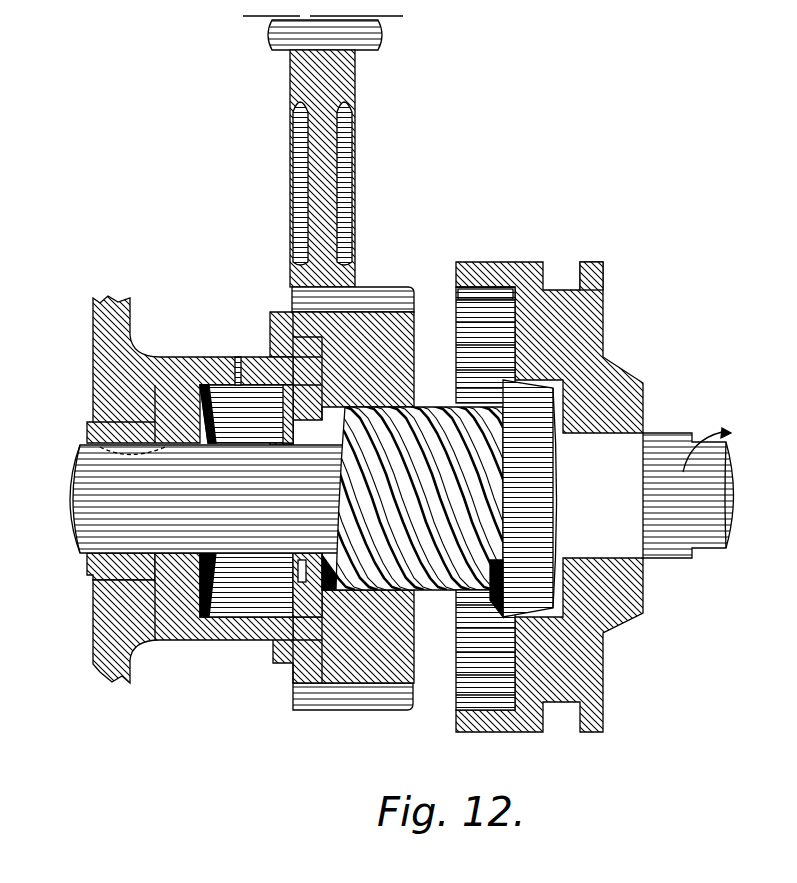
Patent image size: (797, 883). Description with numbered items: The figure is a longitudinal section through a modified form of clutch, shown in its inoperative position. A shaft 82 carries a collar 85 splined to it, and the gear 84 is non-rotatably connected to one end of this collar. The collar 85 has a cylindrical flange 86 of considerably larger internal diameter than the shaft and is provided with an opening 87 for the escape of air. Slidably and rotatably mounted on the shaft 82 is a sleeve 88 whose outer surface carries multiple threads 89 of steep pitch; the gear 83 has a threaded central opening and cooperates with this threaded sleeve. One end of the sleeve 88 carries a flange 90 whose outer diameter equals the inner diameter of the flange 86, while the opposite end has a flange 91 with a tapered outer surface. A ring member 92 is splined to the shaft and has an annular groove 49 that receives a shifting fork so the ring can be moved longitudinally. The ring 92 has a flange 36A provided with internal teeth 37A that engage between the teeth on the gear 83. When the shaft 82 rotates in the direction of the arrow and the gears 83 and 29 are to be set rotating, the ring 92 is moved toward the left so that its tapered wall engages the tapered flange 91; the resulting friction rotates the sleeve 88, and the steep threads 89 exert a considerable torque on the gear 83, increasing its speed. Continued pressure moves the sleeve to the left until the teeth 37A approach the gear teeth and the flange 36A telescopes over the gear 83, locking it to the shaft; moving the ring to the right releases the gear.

The low and reverse gear 29 is at (322, 232).
The gear 83 is at (383, 322).
The gear 84 is at (110, 398).
The collar 85 is at (103, 568).
The cylindrical flange 86 is at (222, 637).
The opening 87 is at (239, 383).
The sleeve 88 is at (293, 572).
The multiple threads 89 is at (428, 420).
The flange 90 is at (287, 405).
The flange 91 is at (533, 395).
The ring member 92 is at (590, 330).
The shaft 82 is at (95, 500).
The flange 36A is at (470, 262).
The internal teeth 37A is at (472, 296).
The annular groove 49 is at (553, 264).